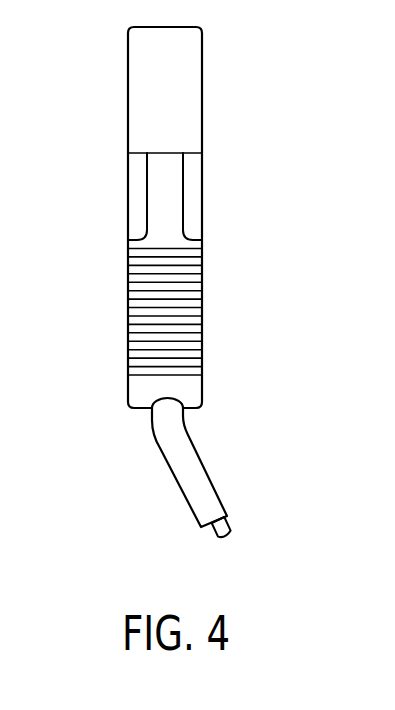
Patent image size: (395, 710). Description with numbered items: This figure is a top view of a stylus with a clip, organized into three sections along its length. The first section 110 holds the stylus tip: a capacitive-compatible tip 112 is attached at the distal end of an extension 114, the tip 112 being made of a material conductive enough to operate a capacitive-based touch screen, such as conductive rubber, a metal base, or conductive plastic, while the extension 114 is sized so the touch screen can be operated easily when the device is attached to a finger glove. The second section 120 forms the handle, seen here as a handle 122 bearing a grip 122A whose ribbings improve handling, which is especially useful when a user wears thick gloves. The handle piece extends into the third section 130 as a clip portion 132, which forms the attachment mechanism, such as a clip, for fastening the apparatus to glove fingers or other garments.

The first section 110 is at (174, 462).
The capacitive-compatible tip 112 is at (231, 524).
The extension 114 is at (190, 468).
The second section 120 is at (165, 270).
The handle 122 is at (175, 196).
The grip 122A is at (185, 300).
The third section 130 is at (158, 90).
The clip portion 132 is at (187, 90).